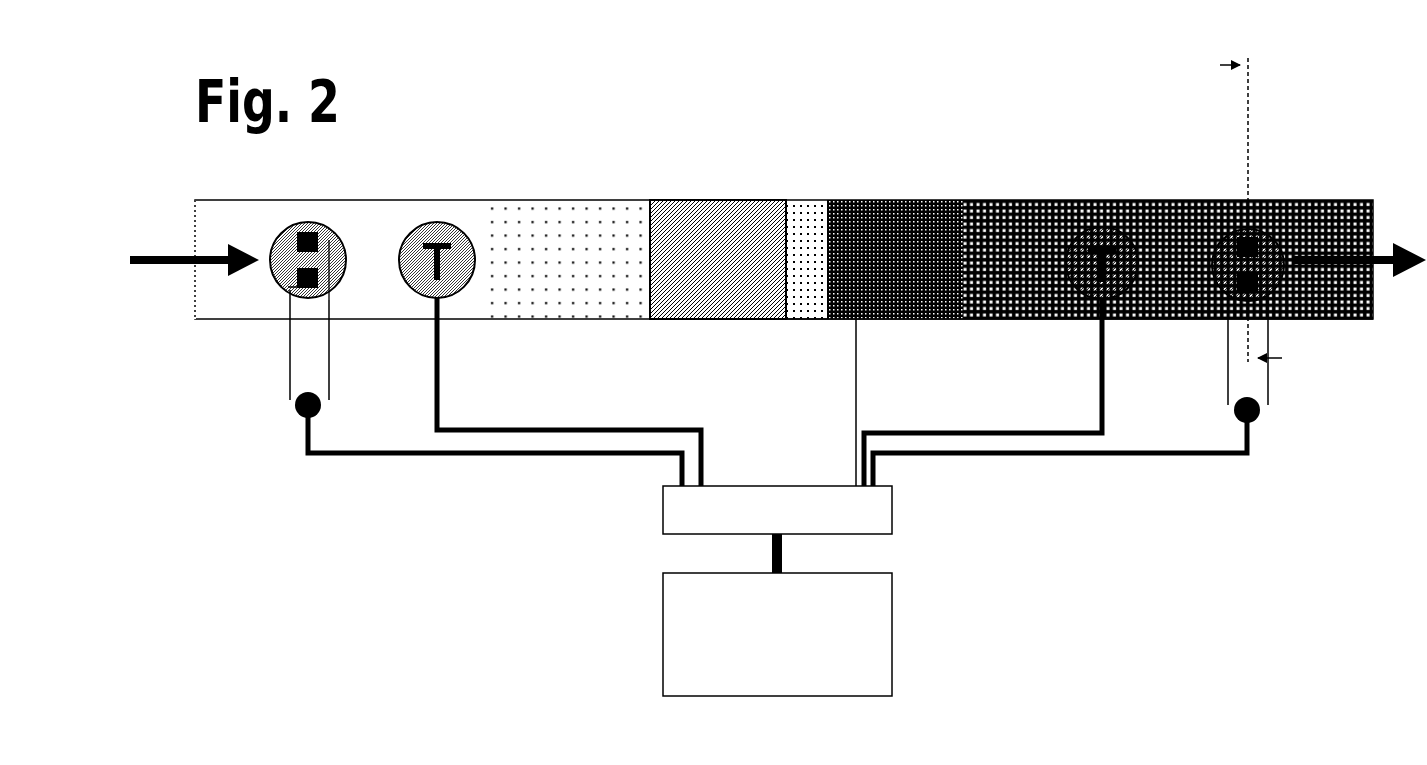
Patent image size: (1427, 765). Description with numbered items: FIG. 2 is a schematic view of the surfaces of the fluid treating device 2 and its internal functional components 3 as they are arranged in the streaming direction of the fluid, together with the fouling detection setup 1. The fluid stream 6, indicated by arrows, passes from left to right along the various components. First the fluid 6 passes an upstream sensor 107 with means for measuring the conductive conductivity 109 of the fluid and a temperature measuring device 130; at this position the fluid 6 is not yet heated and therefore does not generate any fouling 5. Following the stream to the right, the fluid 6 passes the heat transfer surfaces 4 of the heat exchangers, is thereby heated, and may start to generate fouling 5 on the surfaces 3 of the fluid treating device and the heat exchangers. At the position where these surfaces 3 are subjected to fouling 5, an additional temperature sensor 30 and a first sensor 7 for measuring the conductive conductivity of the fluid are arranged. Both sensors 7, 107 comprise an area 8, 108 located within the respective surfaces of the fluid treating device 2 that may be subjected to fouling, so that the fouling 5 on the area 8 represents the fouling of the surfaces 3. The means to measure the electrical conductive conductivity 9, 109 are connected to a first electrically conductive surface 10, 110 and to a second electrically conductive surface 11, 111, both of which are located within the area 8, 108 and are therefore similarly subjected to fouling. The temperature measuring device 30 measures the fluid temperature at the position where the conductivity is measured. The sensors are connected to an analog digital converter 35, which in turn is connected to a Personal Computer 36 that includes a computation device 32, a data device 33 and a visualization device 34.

The fouling detection setup 1 is at (1170, 609).
The fluid treating device 2 is at (656, 121).
The exposed surfaces of the fluid treating device 3 is at (931, 207).
The heat transfer surfaces 4 is at (806, 207).
The fouling 5 is at (1020, 320).
The fluid stream 6 is at (157, 252).
The first sensor 7 is at (1292, 380).
The area of the sensor 8 is at (1293, 202).
The means to measure the electrical conductive conductivity 9 is at (1255, 424).
The first electrically conductive surface 10 is at (1237, 292).
The second electrically conductive surface 11 is at (1262, 238).
The temperature measuring device 30 is at (1103, 228).
The analog digital converter 35 is at (663, 510).
The computation device 32 is at (590, 634).
The data device 33 is at (590, 634).
The visualization device 34 is at (590, 634).
The Personal Computer 36 is at (663, 625).
The sensor for measuring the conductive conductivity 107 is at (252, 427).
The area of the sensor 108 is at (355, 276).
The means for measuring the conductive conductivity 109 is at (317, 420).
The first electrically conductive surface 110 is at (290, 320).
The second electrically conductive surface 111 is at (330, 226).
The temperature measuring device 130 is at (463, 212).